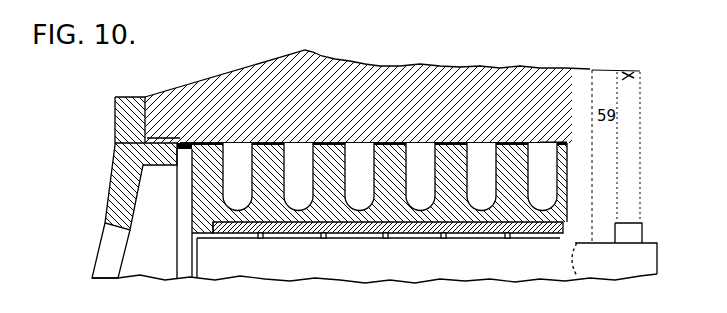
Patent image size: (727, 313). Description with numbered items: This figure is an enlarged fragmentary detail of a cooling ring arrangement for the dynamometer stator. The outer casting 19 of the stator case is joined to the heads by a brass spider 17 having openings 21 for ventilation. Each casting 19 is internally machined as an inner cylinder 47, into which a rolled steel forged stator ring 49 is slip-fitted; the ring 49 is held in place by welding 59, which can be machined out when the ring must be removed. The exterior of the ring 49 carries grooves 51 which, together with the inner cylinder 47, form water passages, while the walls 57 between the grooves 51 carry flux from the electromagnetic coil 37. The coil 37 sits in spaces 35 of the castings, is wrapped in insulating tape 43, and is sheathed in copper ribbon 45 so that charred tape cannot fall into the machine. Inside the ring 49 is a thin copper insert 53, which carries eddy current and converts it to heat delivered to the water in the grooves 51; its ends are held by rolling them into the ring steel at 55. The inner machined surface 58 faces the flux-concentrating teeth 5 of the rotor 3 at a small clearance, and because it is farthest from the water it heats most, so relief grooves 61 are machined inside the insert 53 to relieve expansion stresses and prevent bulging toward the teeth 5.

The outer casting 19 is at (297, 58).
The walls between grooves 57 is at (205, 145).
The inner cylinder 47 is at (548, 148).
The brass spider 17 is at (120, 196).
The welding 59 is at (178, 146).
The openings 21 is at (108, 255).
The stator ring 49 is at (385, 203).
The grooves 51 is at (238, 190).
The copper insert 53 is at (306, 225).
The inner machined surface 58 is at (523, 240).
The relief grooves 61 is at (500, 245).
The rolled-in ends 55 is at (202, 224).
The flux-concentrating teeth 5 is at (488, 274).
The rotor 3 is at (645, 267).
The copper ribbon 45 is at (642, 232).
The electromagnetic coil 37 is at (645, 155).
The insulating tape 43 is at (640, 118).
The spaces 35 is at (640, 76).